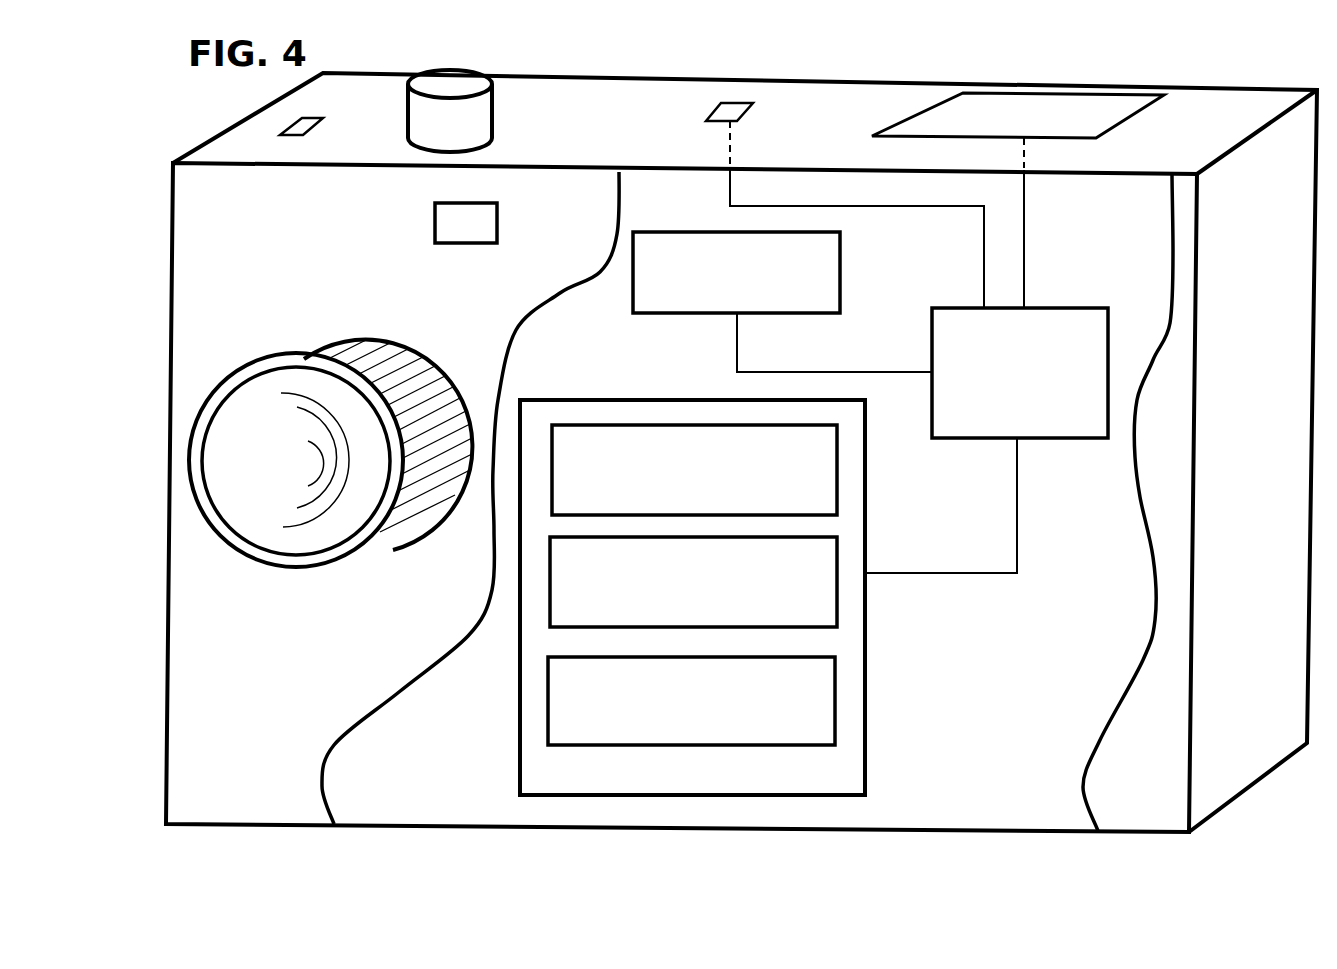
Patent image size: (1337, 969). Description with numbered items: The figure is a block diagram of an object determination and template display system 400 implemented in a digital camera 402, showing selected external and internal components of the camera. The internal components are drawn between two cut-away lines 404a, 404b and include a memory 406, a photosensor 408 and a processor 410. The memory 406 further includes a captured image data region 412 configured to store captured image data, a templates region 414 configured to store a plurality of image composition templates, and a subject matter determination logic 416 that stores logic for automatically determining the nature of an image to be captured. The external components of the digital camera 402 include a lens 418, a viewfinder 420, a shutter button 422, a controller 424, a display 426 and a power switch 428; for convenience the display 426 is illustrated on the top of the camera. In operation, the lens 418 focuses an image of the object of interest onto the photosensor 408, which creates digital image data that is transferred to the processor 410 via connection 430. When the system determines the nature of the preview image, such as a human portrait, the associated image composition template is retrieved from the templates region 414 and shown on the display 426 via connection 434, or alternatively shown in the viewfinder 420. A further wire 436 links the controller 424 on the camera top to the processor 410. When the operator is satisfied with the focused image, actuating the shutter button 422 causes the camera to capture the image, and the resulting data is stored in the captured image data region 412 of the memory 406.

The object determination and template display system 400 is at (226, 250).
The digital camera 402 is at (231, 794).
The cut-away line 404a is at (588, 277).
The cut-away line 404b is at (1093, 757).
The memory 406 is at (851, 786).
The photosensor 408 is at (826, 302).
The processor 410 is at (1091, 427).
The captured image data region 412 is at (824, 507).
The templates region 414 is at (823, 618).
The subject matter determination logic 416 is at (821, 738).
The lens 418 is at (352, 338).
The viewfinder 420 is at (468, 244).
The shutter button 422 is at (494, 100).
The controller 424 is at (742, 108).
The display 426 is at (992, 142).
The power switch 428 is at (317, 122).
The connection 430 is at (898, 372).
The connection 434 is at (1024, 261).
The shutter button connection 436 is at (952, 210).